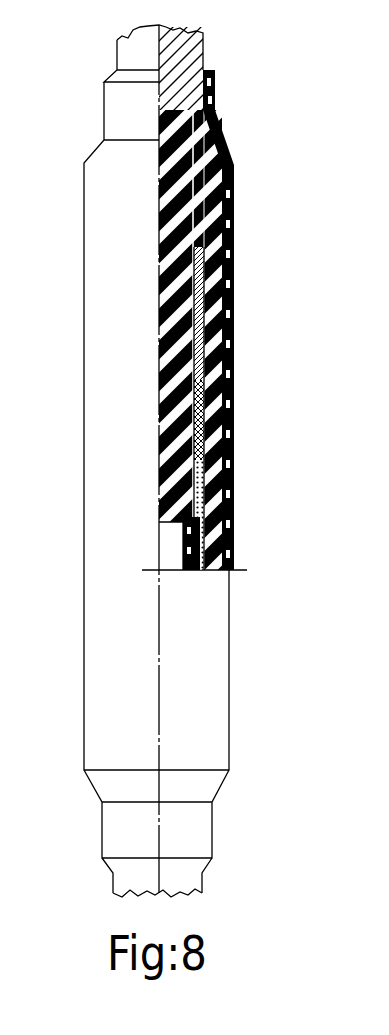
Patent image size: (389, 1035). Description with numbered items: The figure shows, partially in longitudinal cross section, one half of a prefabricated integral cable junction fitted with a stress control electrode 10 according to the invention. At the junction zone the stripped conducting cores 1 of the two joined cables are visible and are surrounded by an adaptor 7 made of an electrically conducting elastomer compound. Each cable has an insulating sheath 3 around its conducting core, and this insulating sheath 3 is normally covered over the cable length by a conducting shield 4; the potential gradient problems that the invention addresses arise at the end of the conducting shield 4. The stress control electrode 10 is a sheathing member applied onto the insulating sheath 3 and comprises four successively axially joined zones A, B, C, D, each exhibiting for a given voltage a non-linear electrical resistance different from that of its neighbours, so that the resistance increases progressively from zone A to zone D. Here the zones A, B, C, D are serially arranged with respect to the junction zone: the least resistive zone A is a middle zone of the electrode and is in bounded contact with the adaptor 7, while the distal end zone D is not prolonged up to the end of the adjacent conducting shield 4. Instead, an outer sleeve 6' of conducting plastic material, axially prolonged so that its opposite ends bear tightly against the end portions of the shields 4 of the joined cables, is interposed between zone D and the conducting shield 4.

The conducting core 1 is at (168, 518).
The insulating sheath 3 is at (173, 466).
The conducting shield 4 is at (163, 93).
The outer sleeve 6' is at (255, 320).
The adaptor 7 is at (192, 571).
The stress control electrode 10 is at (235, 431).
The end electrode zone A is at (182, 524).
The electrode zone B is at (197, 394).
The electrode zone C is at (190, 354).
The distal end zone D is at (198, 277).